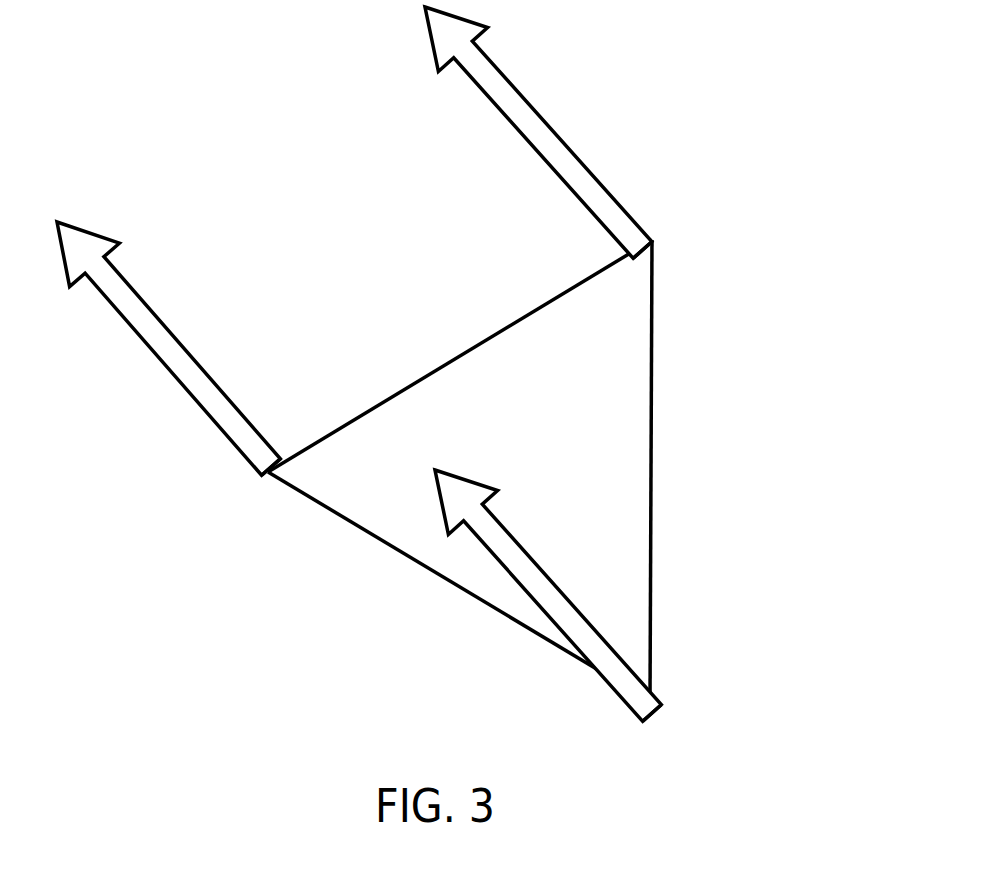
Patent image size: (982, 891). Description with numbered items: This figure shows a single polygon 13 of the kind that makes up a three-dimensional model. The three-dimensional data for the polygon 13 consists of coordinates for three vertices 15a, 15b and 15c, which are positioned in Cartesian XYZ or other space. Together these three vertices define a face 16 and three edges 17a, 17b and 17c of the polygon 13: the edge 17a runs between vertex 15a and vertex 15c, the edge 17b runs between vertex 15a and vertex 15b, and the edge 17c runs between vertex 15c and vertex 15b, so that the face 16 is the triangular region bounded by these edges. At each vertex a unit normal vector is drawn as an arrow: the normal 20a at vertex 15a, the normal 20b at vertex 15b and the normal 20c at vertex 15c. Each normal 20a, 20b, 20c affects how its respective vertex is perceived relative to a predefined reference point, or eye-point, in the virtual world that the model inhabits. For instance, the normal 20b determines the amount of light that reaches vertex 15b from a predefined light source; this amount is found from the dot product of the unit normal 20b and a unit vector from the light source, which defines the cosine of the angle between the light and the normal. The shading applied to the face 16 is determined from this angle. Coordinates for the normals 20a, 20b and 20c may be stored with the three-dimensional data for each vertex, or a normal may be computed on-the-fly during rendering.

The polygon 13 is at (447, 364).
The vertex 15a is at (653, 241).
The vertex 15b is at (655, 692).
The vertex 15c is at (270, 478).
The face 16 is at (505, 470).
The edge 17a is at (480, 340).
The edge 17b is at (652, 417).
The edge 17c is at (403, 557).
The unit normal vector 20a is at (527, 112).
The unit normal vector 20b is at (542, 587).
The unit normal vector 20c is at (157, 325).